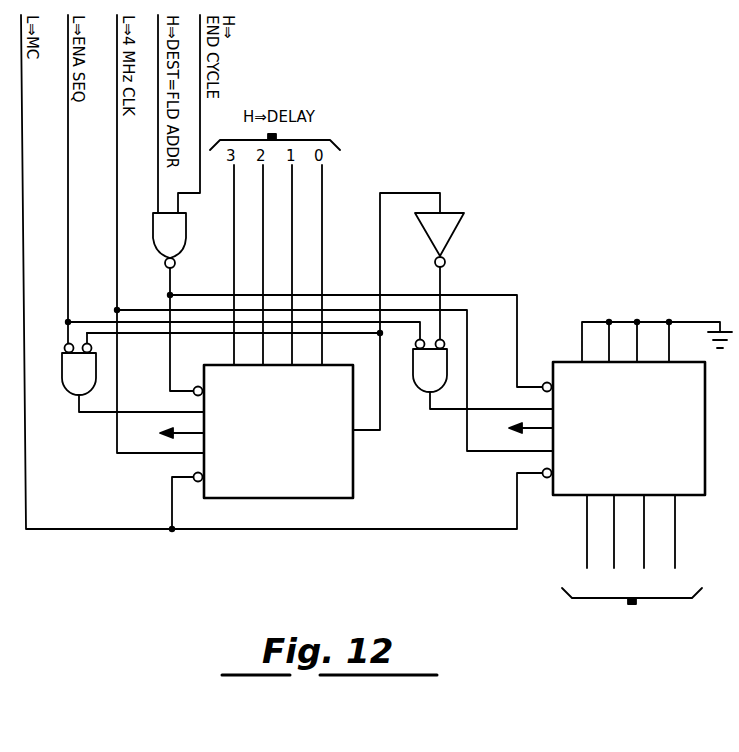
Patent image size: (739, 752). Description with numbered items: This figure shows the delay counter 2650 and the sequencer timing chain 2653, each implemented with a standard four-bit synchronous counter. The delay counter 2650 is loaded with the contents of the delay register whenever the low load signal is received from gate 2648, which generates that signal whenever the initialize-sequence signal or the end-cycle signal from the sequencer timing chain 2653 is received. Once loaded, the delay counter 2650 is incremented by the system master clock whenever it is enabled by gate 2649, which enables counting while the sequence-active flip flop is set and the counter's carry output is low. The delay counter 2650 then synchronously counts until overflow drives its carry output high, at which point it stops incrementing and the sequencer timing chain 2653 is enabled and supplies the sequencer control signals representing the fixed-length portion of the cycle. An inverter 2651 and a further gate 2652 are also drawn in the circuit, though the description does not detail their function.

The gate 2648 is at (185, 242).
The gate 2649 is at (64, 390).
The delay counter 2650 is at (353, 480).
The inverter 2651 is at (455, 228).
The NAND gate 2652 is at (415, 394).
The sequencer timing chain 2653 is at (562, 500).